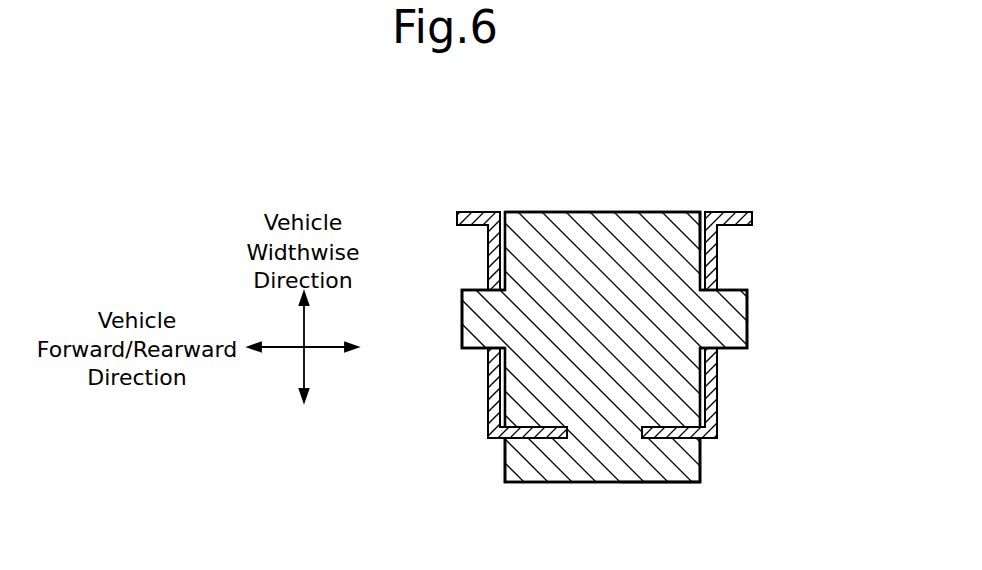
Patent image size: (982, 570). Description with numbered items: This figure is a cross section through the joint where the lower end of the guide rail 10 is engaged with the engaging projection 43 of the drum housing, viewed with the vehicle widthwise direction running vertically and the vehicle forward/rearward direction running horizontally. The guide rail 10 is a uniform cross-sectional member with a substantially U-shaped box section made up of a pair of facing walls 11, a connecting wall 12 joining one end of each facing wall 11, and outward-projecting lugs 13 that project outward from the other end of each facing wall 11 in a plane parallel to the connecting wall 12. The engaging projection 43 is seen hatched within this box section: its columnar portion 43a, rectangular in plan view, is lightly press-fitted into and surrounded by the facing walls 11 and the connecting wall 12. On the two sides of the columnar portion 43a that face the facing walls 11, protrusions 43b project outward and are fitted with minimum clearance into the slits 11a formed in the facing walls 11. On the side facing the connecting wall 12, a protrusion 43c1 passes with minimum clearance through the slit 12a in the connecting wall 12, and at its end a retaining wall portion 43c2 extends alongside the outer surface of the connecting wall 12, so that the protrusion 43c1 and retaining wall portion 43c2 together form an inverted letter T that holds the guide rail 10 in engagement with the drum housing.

The guide rail 10 is at (721, 203).
The facing walls 11 is at (495, 250).
The slits 11a is at (478, 342).
The connecting wall 12 is at (538, 428).
The slit 12a is at (575, 433).
The outward-projecting lugs 13 is at (472, 212).
The engaging projection 43 is at (634, 222).
The columnar portion 43a is at (553, 252).
The protrusions 43b is at (468, 318).
The protrusion 43c1 is at (605, 432).
The retaining wall portion 43c2 is at (672, 468).